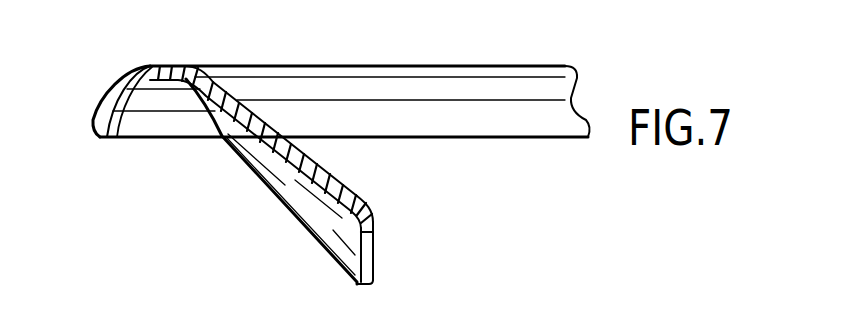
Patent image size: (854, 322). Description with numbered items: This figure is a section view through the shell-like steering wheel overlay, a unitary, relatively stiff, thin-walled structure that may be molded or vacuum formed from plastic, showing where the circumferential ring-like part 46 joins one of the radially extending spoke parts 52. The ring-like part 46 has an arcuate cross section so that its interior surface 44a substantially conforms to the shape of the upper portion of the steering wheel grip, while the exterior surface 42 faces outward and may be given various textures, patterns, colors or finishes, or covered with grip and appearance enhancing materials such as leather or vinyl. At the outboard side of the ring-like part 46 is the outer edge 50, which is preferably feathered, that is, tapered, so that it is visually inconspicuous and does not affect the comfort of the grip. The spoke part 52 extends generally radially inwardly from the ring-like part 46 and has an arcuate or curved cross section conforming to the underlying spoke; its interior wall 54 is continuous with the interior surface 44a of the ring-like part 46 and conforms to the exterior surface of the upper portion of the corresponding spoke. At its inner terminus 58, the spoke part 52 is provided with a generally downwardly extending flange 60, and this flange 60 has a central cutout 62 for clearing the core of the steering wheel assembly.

The exterior surface 42 is at (242, 85).
The ring-like part 46 is at (487, 84).
The outer edge 50 is at (107, 138).
The interior surface of the ring-like part 44a is at (122, 102).
The spoke part 52 is at (273, 130).
The interior wall 54 is at (283, 203).
The inner terminus 58 is at (363, 203).
The flange 60 is at (374, 231).
The central cutout 62 is at (374, 267).